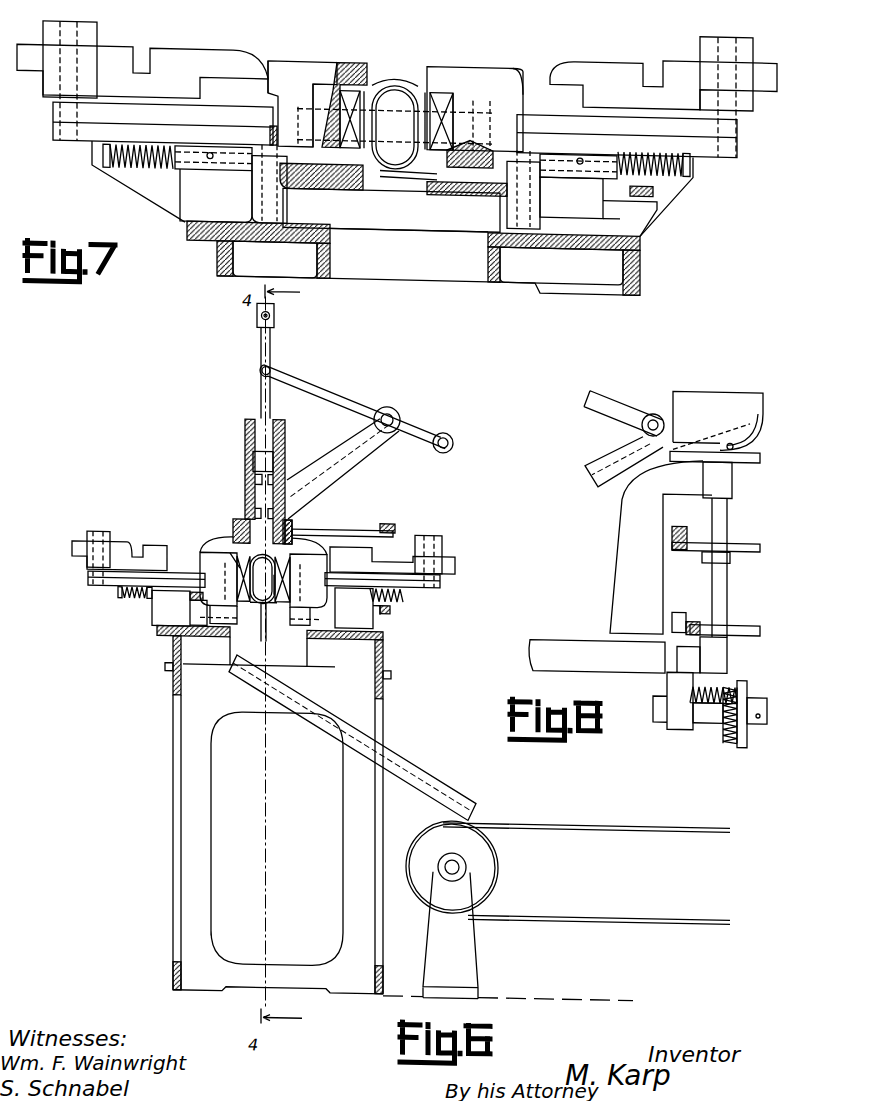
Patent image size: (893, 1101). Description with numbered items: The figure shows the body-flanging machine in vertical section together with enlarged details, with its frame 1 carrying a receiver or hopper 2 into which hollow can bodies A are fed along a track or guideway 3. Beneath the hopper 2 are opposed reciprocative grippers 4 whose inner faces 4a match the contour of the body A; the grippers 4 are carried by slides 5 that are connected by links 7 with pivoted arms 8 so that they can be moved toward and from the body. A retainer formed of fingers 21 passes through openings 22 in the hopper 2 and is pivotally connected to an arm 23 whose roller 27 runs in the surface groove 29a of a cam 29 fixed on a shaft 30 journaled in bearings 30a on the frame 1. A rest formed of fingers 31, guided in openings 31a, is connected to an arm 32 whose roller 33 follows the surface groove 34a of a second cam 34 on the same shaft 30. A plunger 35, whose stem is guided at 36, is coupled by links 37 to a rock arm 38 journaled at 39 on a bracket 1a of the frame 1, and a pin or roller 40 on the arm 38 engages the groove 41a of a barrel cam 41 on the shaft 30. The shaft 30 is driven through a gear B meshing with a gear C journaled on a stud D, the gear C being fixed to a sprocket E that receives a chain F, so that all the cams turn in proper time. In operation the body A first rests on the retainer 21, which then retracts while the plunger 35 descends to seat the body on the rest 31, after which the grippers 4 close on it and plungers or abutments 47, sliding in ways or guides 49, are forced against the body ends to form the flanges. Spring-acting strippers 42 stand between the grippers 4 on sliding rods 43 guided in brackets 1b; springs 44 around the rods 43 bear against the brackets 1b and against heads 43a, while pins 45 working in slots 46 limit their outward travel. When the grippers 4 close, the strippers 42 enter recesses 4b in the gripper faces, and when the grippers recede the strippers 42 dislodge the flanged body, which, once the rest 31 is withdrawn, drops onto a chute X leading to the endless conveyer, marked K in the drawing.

In FIG. 7, the frame 1 is at (325, 280).
In FIG. 6, the frame 1 is at (383, 694).
In FIG. 6, the bracket 1a is at (343, 469).
In FIG. 8, the bracket 1a is at (624, 462).
In FIG. 7, the brackets 1b is at (396, 188).
In FIG. 6, the brackets 1b is at (396, 644).
In FIG. 6, the receiver or hopper 2 is at (245, 474).
In FIG. 6, the track or guideway 3 is at (247, 507).
In FIG. 7, the grippers 4 is at (366, 62).
In FIG. 6, the grippers 4 is at (263, 588).
In FIG. 7, the inner faces 4a is at (376, 88).
In FIG. 6, the inner faces 4a is at (243, 575).
In FIG. 7, the recesses 4b is at (325, 100).
In FIG. 7, the slides 5 is at (395, 130).
In FIG. 6, the slides 5 is at (90, 584).
In FIG. 7, the links 7 is at (397, 77).
In FIG. 6, the links 7 is at (122, 548).
In FIG. 7, the arms 8 is at (93, 42).
In FIG. 6, the arms 8 is at (88, 540).
In FIG. 6, the retainer fingers 21 is at (345, 532).
In FIG. 6, the openings 22 is at (293, 529).
In FIG. 6, the arm 23 is at (400, 517).
In FIG. 8, the arm 23 is at (697, 518).
In FIG. 8, the projection or roller 27 is at (672, 547).
In FIG. 8, the cam 29 is at (738, 540).
In FIG. 8, the surface groove 29a is at (701, 553).
In FIG. 8, the shaft 30 is at (728, 586).
In FIG. 8, the bearings 30a is at (732, 488).
In FIG. 7, the rest fingers 31 is at (413, 182).
In FIG. 6, the rest fingers 31 is at (261, 612).
In FIG. 7, the openings 31a is at (445, 195).
In FIG. 7, the arm 32 is at (655, 201).
In FIG. 6, the arm 32 is at (390, 617).
In FIG. 8, the arm 32 is at (690, 616).
In FIG. 8, the projection or roller 33 is at (672, 620).
In FIG. 8, the cam 34 is at (742, 626).
In FIG. 8, the surface groove 34a is at (682, 641).
In FIG. 6, the plunger 35 is at (258, 463).
In FIG. 6, the guide 36 is at (245, 433).
In FIG. 6, the links 37 is at (272, 347).
In FIG. 6, the rock arm 38 is at (330, 389).
In FIG. 8, the rock arm 38 is at (636, 409).
In FIG. 6, the journal 39 is at (392, 410).
In FIG. 8, the journal 39 is at (660, 410).
In FIG. 6, the pin or roller 40 is at (452, 440).
In FIG. 8, the pin or roller 40 is at (731, 438).
In FIG. 8, the barrel cam 41 is at (718, 421).
In FIG. 8, the groove 41a is at (750, 434).
In FIG. 7, the strippers 42 is at (392, 178).
In FIG. 6, the strippers 42 is at (232, 562).
In FIG. 7, the sliding rods 43 is at (262, 175).
In FIG. 6, the sliding rods 43 is at (190, 604).
In FIG. 7, the head 43a is at (100, 166).
In FIG. 6, the head 43a is at (118, 599).
In FIG. 7, the springs 44 is at (150, 178).
In FIG. 6, the springs 44 is at (135, 605).
In FIG. 7, the pins 45 is at (208, 166).
In FIG. 7, the slots 46 is at (216, 166).
In FIG. 7, the plungers or abutments 47 is at (398, 82).
In FIG. 7, the ways or guides 49 is at (285, 98).
In FIG. 7, the hollow body A is at (395, 127).
In FIG. 6, the hollow body A is at (262, 578).
In FIG. 8, the gear B is at (692, 702).
In FIG. 8, the gear C is at (732, 740).
In FIG. 8, the shaft or stud D is at (708, 718).
In FIG. 8, the sprocket E is at (752, 745).
In FIG. 8, the chain F is at (748, 687).
In FIG. 6, the conveyor belt K is at (572, 824).
In FIG. 6, the chute X is at (318, 737).